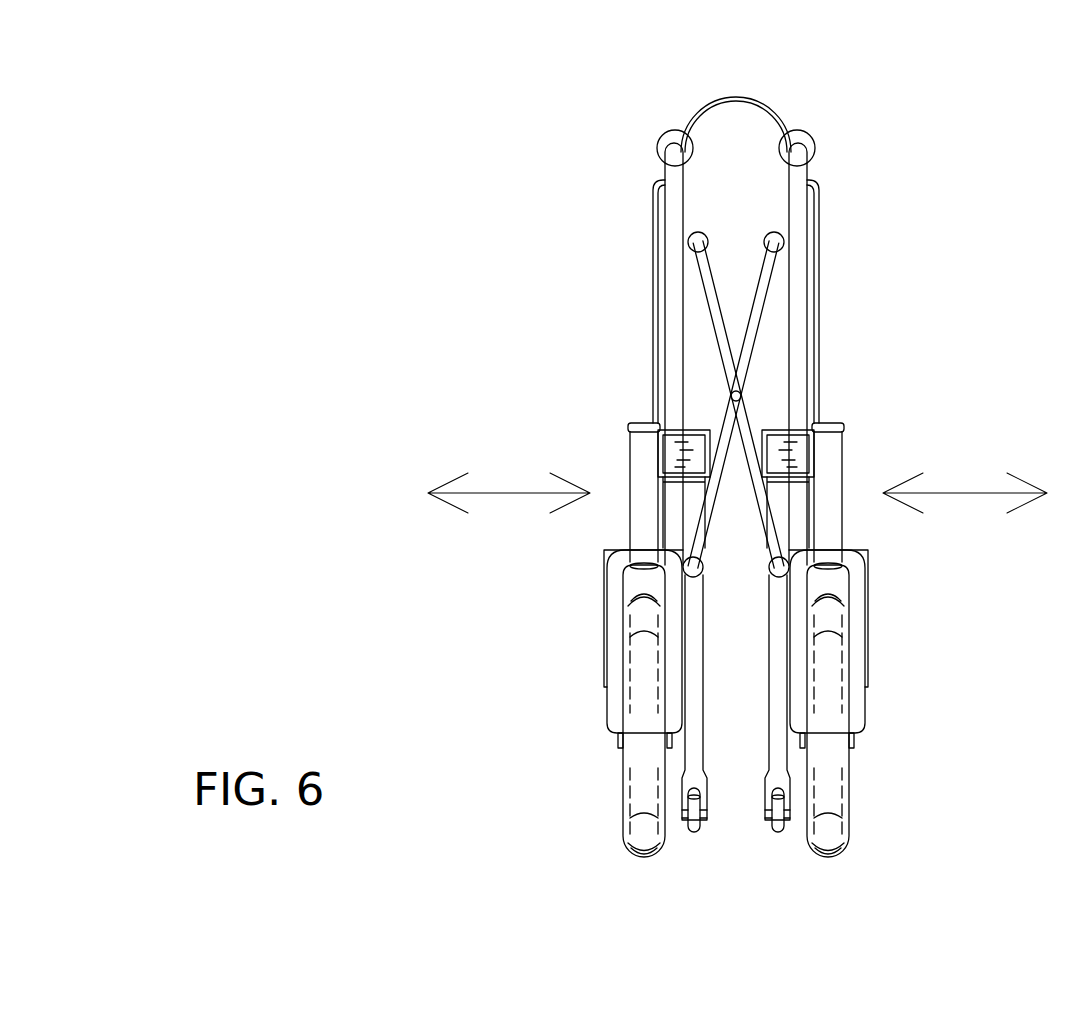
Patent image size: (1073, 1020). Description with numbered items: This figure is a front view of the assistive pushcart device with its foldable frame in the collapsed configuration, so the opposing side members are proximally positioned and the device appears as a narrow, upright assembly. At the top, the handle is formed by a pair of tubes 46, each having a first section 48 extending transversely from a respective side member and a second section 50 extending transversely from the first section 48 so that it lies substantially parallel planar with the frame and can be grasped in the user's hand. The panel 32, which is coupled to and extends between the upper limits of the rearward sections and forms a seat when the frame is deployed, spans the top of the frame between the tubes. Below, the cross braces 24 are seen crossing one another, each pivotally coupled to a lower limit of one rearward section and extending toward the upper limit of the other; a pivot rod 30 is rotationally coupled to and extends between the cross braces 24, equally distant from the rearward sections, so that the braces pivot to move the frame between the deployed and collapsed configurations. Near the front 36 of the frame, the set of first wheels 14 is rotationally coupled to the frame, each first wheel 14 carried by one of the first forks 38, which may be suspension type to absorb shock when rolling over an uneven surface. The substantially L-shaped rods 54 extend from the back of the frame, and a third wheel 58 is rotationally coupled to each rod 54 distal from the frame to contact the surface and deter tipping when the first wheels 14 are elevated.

The first wheels 14 is at (830, 852).
The cross brace 24 is at (753, 312).
The pivot rod 30 is at (739, 392).
The panel 32 is at (742, 97).
The front 36 is at (678, 457).
The first forks 38 is at (900, 433).
The tubes 46 is at (672, 212).
The first section 48 is at (797, 262).
The second section 50 is at (798, 146).
The rods 54 is at (780, 640).
The third wheels 58 is at (782, 830).